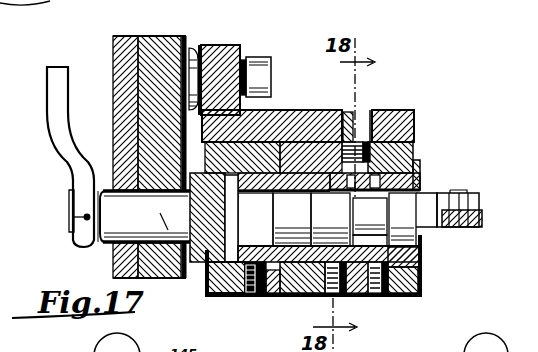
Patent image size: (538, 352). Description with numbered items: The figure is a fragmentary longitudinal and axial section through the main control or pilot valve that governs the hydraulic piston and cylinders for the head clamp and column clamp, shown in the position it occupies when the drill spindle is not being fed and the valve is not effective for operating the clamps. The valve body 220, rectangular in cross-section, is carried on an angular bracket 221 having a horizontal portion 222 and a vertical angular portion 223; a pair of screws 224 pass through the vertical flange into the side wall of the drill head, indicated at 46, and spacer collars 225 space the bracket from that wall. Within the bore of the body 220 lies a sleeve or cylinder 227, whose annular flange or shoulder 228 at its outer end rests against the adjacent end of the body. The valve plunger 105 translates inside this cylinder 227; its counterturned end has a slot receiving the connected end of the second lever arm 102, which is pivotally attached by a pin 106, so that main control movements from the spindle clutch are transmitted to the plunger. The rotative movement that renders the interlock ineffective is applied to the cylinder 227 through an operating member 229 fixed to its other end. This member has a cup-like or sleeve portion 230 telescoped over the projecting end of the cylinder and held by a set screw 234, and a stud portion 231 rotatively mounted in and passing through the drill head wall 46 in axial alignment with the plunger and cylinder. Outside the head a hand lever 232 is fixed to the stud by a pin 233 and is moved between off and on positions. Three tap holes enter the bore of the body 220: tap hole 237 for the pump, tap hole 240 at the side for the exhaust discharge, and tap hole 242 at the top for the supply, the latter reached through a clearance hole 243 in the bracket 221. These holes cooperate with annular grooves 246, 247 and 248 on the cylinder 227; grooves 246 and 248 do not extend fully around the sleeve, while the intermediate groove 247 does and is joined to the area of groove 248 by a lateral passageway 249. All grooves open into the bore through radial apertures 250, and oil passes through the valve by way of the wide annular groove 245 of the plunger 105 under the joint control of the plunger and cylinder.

The supporting block 46 is at (152, 45).
The second lever arm 102 is at (483, 217).
The valve plunger 105 is at (432, 191).
The pin 106 is at (476, 191).
The valve body 220 is at (417, 148).
The angular bracket 221 is at (417, 115).
The horizontal portion 222 is at (317, 116).
The vertical angular portion 223 is at (231, 49).
The screws 224 is at (266, 75).
The spacer collars 225 is at (192, 55).
The sleeve or cylinder 227 is at (424, 262).
The annular flange or shoulder 228 is at (424, 276).
The operating member 229 is at (197, 280).
The cup-like or sleeve portion 230 is at (236, 297).
The stud portion 231 is at (105, 246).
The hand lever 232 is at (48, 109).
The pin 233 is at (69, 217).
The set screw 234 is at (259, 298).
The tap hole 237 is at (365, 297).
The tap hole 240 is at (386, 297).
The tap hole 242 is at (403, 108).
The clearance hole 243 is at (364, 112).
The annular groove 245 is at (370, 241).
The annular groove 246 is at (292, 219).
The intermediate groove 247 is at (330, 219).
The annular groove 248 is at (404, 219).
The lateral passageway 249 is at (373, 297).
The radial apertures 250 is at (370, 216).